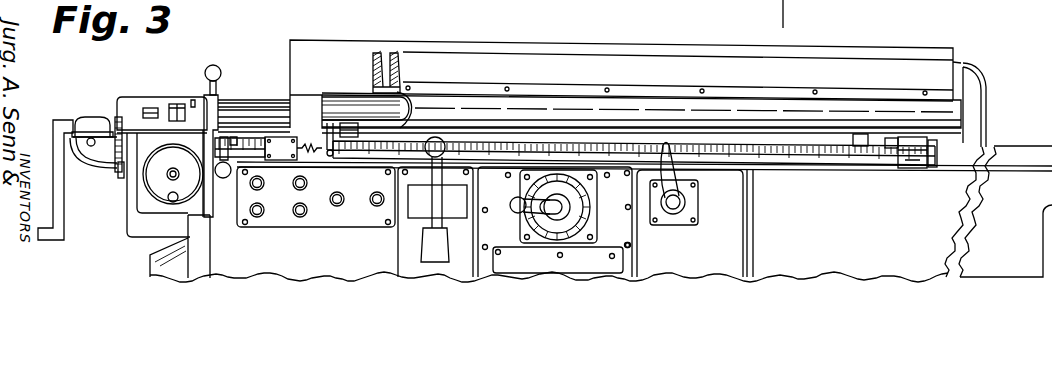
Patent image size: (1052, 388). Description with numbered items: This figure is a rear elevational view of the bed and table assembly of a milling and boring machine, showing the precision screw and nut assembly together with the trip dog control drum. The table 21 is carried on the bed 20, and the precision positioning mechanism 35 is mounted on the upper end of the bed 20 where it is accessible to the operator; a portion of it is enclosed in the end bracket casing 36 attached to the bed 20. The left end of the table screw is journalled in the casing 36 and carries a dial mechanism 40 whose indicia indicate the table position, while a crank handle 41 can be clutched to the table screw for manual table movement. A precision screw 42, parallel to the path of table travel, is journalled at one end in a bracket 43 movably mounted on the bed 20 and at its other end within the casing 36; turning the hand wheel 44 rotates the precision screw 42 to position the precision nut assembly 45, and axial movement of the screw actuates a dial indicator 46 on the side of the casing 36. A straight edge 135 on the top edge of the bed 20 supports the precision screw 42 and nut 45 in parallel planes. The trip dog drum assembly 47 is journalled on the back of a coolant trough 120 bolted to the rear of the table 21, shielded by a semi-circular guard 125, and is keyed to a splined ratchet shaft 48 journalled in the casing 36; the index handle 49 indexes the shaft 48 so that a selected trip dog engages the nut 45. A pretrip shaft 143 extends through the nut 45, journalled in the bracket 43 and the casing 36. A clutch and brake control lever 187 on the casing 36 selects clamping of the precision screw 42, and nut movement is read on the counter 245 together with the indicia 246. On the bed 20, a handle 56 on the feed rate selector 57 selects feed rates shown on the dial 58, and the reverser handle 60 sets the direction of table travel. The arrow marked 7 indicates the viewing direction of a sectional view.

The section line for FIG. 7 is at (788, 13).
The bed 20 is at (1010, 147).
The table 21 is at (630, 47).
The positioning mechanism 35 is at (190, 62).
The casing 36 is at (142, 234).
The dial mechanism 40 is at (113, 108).
The crank handle 41 is at (60, 183).
The precision screw 42 is at (815, 166).
The bracket 43 is at (906, 160).
The hand wheel 44 is at (157, 180).
The precision nut assembly 45 is at (302, 160).
The dial indicator 46 is at (91, 117).
The drum assembly 47 is at (340, 106).
The splined shaft 48 is at (270, 98).
The handle 49 is at (222, 72).
The handle 56 is at (519, 205).
The feed rate selector 57 is at (535, 240).
The dial 58 is at (523, 180).
The handle 60 is at (427, 219).
The coolant trough 120 is at (527, 63).
The semi-circular guard 125 is at (637, 107).
The straight edge 135 is at (725, 142).
The pretrip shaft 143 is at (858, 142).
The clutch and brake control lever 187 is at (228, 192).
The counter 245 is at (148, 108).
The indicia 246 is at (178, 104).